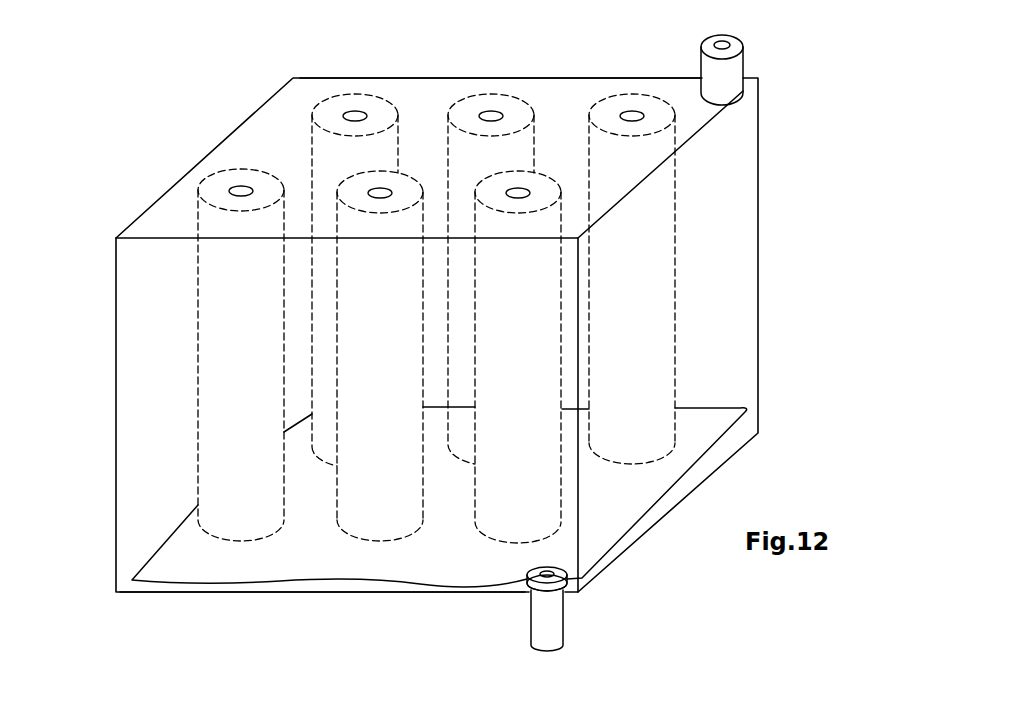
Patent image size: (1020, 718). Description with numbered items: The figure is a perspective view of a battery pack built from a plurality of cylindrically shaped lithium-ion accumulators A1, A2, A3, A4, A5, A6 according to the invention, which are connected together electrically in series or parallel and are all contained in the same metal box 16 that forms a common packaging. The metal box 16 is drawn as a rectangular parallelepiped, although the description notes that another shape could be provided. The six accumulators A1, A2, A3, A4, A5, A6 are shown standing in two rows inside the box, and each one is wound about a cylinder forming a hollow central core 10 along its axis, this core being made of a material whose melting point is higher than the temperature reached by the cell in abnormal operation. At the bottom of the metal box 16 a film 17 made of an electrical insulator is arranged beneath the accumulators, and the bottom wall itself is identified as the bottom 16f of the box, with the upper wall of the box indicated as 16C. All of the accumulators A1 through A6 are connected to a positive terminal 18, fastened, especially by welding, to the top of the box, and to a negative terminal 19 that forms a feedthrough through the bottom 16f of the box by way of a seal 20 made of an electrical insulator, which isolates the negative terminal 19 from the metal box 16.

The hollow central core 10 is at (240, 187).
The metal box 16 is at (758, 212).
The top wall of case 16C is at (428, 90).
The bottom of the box 16f is at (238, 597).
The film 17 is at (710, 420).
The positive terminal 18 is at (730, 68).
The negative terminal 19 is at (540, 612).
The seal 20 is at (555, 568).
The lithium-ion accumulator A1 is at (217, 318).
The lithium-ion accumulator A2 is at (312, 137).
The lithium-ion accumulator A3 is at (343, 532).
The lithium-ion accumulator A4 is at (462, 442).
The lithium-ion accumulator A5 is at (545, 185).
The lithium-ion accumulator A6 is at (658, 309).